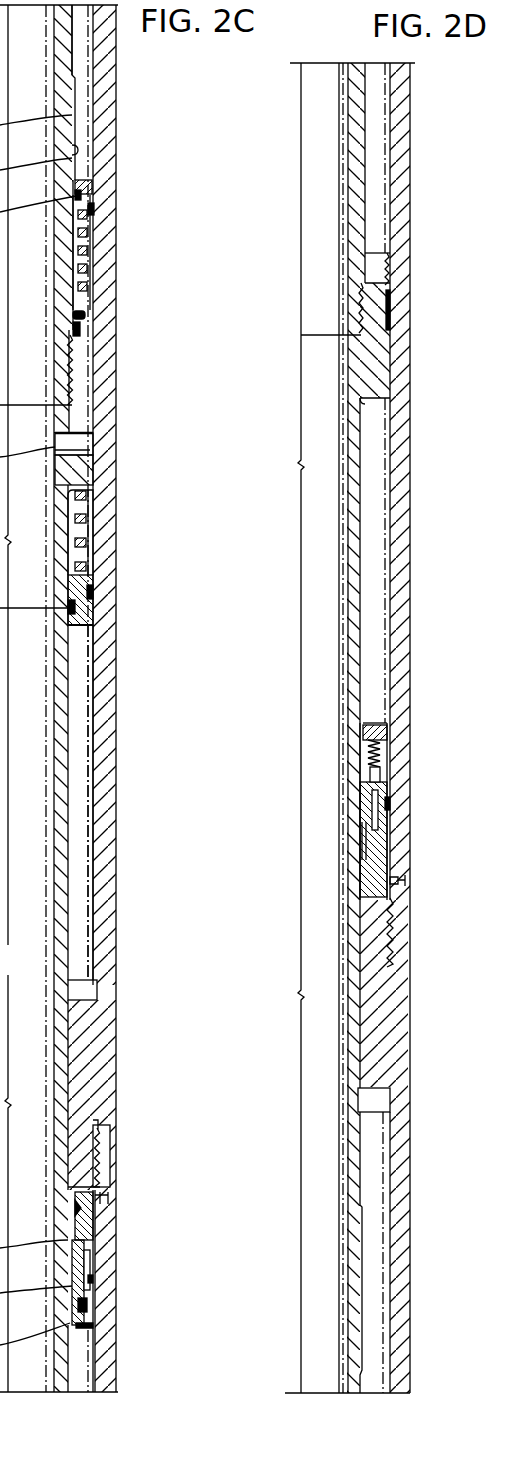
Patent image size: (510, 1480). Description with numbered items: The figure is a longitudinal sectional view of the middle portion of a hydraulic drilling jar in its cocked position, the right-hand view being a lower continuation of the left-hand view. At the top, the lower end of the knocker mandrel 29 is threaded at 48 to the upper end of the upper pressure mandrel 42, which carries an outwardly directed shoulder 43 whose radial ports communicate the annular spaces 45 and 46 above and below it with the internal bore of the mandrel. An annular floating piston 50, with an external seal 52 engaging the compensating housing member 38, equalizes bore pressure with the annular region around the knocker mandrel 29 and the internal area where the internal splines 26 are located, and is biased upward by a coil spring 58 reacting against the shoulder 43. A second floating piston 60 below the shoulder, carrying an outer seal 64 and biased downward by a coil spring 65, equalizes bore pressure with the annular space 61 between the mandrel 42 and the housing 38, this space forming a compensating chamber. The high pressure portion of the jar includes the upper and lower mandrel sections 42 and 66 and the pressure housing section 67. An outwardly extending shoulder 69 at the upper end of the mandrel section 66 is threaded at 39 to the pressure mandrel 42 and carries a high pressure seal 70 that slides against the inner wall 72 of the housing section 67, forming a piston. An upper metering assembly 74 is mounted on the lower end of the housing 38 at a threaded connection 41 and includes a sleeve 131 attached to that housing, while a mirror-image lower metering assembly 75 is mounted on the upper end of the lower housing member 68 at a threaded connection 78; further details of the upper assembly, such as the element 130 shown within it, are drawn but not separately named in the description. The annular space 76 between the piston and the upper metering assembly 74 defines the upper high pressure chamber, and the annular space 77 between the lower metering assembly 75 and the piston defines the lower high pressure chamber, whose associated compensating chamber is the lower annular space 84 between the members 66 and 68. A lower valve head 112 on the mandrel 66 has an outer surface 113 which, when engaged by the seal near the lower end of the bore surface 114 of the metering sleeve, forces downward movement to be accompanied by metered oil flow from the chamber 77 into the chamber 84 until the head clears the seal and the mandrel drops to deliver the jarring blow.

In FIG. 2C, the internal splines 26 is at (80, 1380).
In FIG. 2C, the knocker mandrel 29 is at (70, 47).
In FIG. 2C, the compensating housing member 38 is at (108, 147).
In FIG. 2D, the threaded connection 39 is at (365, 308).
In FIG. 2C, the threaded connection 41 is at (100, 1157).
In FIG. 2C, the upper pressure mandrel 42 is at (63, 752).
In FIG. 2D, the upper pressure mandrel 42 is at (365, 123).
In FIG. 2C, the outwardly directed shoulder 43 is at (85, 423).
In FIG. 2C, the annular space 45 is at (88, 306).
In FIG. 2C, the annular space 46 is at (83, 507).
In FIG. 2C, the threaded connection 48 is at (72, 378).
In FIG. 2C, the annular floating piston 50 is at (80, 193).
In FIG. 2C, the external seal 52 is at (95, 210).
In FIG. 2C, the coil spring 58 is at (88, 265).
In FIG. 2C, the second floating piston 60 is at (90, 620).
In FIG. 2C, the annular space 61 is at (80, 677).
In FIG. 2C, the outer seal 64 is at (90, 590).
In FIG. 2C, the coil spring 65 is at (83, 543).
In FIG. 2D, the lower mandrel section 66 is at (357, 537).
In FIG. 2C, the pressure housing section 67 is at (98, 1340).
In FIG. 2D, the pressure housing section 67 is at (395, 175).
In FIG. 2D, the lower housing member 68 is at (396, 1147).
In FIG. 2D, the outwardly extending shoulder 69 is at (378, 343).
In FIG. 2D, the high pressure seal 70 is at (390, 318).
In FIG. 2D, the inner wall 72 is at (383, 449).
In FIG. 2C, the upper metering assembly 74 is at (100, 1268).
In FIG. 2D, the lower metering assembly 75 is at (392, 808).
In FIG. 2D, the annular space 76 is at (377, 222).
In FIG. 2D, the annular space 77 is at (372, 625).
In FIG. 2D, the threaded connection 78 is at (393, 933).
In FIG. 2D, the lower annular space 84 is at (370, 1260).
In FIG. 2D, the lower valve head 112 is at (352, 793).
In FIG. 2D, the outer surface 113 is at (362, 770).
In FIG. 2D, the bore surface 114 is at (362, 822).
In FIG. 2C, the seal assembly 130 is at (92, 1292).
In FIG. 2C, the sleeve 131 is at (95, 1223).